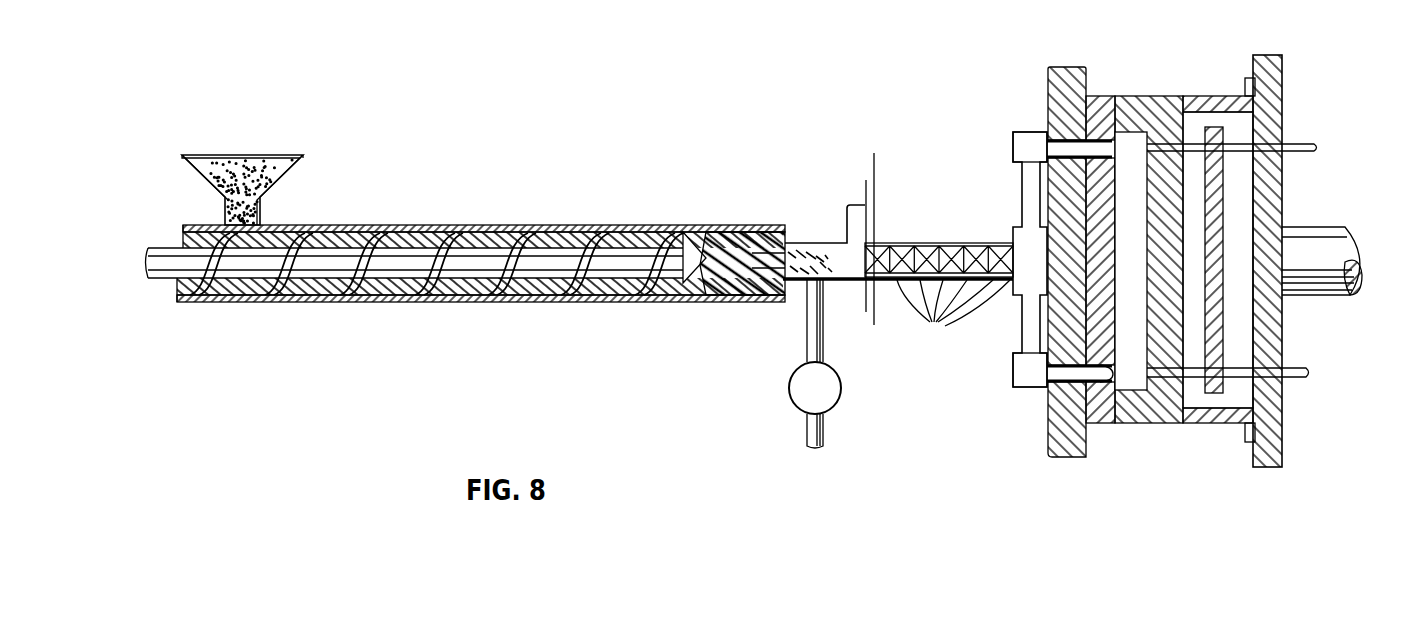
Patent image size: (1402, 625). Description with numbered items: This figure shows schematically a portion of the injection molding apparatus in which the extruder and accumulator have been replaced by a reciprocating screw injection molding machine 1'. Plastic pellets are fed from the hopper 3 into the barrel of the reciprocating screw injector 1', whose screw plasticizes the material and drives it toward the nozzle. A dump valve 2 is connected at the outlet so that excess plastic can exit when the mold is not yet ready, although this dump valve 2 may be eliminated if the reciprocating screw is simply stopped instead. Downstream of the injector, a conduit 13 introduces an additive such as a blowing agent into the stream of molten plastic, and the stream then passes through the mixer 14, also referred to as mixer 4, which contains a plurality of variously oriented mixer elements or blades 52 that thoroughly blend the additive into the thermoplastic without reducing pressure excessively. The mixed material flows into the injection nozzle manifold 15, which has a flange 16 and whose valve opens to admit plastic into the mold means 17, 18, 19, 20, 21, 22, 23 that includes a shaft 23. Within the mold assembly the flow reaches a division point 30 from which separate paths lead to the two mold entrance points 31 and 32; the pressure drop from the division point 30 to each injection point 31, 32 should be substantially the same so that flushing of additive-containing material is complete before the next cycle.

The reciprocating screw injection molding machine 1' is at (489, 287).
The dump valve 2 is at (789, 395).
The hopper 3 is at (248, 155).
The mixer 4 is at (842, 160).
The conduit for introducing an additive 13 is at (846, 220).
The mixer 14 is at (931, 240).
The injection nozzle manifold 15 is at (1013, 148).
The manifold flange 16 is at (1036, 130).
The mold means 17 is at (1064, 68).
The mold means 18 is at (1106, 100).
The mold means 19 is at (1138, 140).
The mold means 20 is at (1188, 150).
The mold means 21 is at (1217, 127).
The mold means 22 is at (1270, 55).
The mold means 23 is at (1330, 227).
The division point 30 is at (1022, 292).
The mold entrance point 31 is at (1104, 140).
The mold entrance point 32 is at (1103, 374).
The mixer elements 52 is at (953, 307).